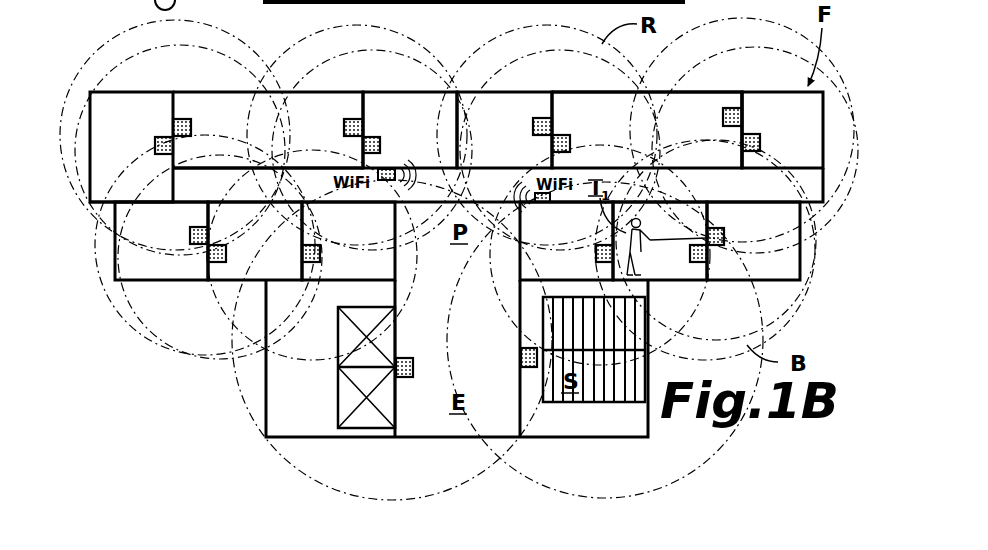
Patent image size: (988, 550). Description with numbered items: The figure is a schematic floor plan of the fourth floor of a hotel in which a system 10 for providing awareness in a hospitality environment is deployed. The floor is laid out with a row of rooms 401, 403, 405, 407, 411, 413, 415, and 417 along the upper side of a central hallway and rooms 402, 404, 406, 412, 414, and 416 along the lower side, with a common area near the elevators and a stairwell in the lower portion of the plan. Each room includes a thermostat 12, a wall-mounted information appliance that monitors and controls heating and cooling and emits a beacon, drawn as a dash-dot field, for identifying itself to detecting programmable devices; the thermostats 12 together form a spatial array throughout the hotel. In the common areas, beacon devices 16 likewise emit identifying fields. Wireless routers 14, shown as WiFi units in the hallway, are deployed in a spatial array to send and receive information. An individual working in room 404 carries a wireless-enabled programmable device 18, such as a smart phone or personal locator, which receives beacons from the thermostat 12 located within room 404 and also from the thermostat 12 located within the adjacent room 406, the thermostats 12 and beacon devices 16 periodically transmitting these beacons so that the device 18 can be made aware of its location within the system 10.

The system for providing awareness in a hospitality environment 10 is at (112, 42).
The thermostat 12 is at (457, 194).
The wireless router 14 is at (464, 176).
The beacon device 16 is at (466, 364).
The wireless-enabled programmable device 18 is at (724, 237).
The room 401 is at (504, 130).
The room 402 is at (566, 241).
The room 403 is at (647, 130).
The room 404 is at (660, 241).
The room 405 is at (647, 130).
The room 406 is at (753, 241).
The room 407 is at (782, 130).
The room 411 is at (410, 130).
The room 412 is at (348, 241).
The room 413 is at (268, 145).
The room 414 is at (255, 241).
The room 415 is at (268, 130).
The room 416 is at (161, 241).
The room 417 is at (131, 147).